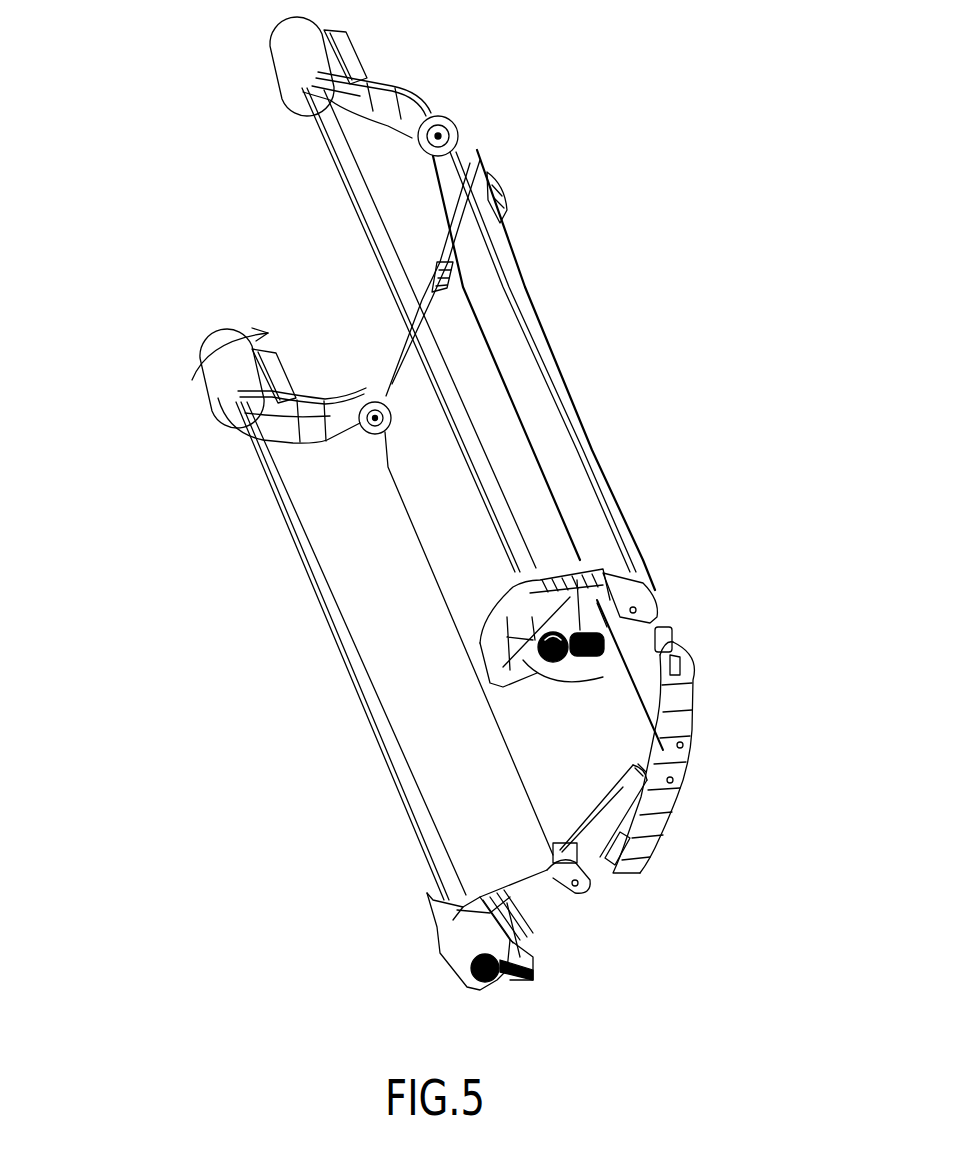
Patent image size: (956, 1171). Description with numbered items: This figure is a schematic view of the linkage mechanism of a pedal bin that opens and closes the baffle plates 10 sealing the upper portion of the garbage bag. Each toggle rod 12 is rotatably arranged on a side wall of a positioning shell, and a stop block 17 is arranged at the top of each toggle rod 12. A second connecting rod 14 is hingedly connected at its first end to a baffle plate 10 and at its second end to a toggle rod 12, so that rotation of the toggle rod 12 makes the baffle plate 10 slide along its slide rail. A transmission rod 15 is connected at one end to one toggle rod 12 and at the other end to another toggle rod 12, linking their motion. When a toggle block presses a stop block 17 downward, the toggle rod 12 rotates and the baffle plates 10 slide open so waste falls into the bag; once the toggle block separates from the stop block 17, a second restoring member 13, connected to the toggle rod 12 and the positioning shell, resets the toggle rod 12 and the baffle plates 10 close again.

The baffle plate 10 is at (545, 423).
The toggle rod 12 is at (215, 380).
The second restoring member 13 is at (437, 958).
The second connecting rod 14 is at (363, 427).
The transmission rod 15 is at (350, 200).
The stop block 17 is at (603, 567).